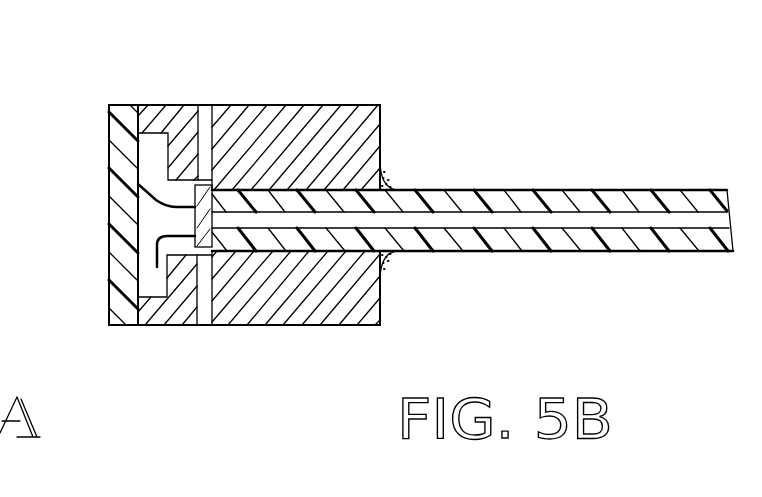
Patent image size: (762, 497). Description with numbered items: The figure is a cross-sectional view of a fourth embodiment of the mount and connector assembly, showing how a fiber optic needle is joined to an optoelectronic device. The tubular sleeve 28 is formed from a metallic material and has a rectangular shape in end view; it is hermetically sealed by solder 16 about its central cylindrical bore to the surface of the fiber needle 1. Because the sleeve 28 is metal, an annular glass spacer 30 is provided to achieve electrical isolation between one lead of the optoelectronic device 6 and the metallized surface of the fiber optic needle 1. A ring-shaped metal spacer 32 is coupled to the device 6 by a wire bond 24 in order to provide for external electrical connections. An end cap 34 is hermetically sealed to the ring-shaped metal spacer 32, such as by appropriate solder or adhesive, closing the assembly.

The fiber needle 1 is at (620, 190).
The optoelectronic device 6 is at (138, 184).
The solder 16 is at (393, 167).
The wire bond 24 is at (157, 244).
The tubular sleeve 28 is at (352, 105).
The annular glass spacer 30 is at (203, 105).
The ring-shaped metal spacer 32 is at (173, 104).
The end cap 34 is at (108, 219).